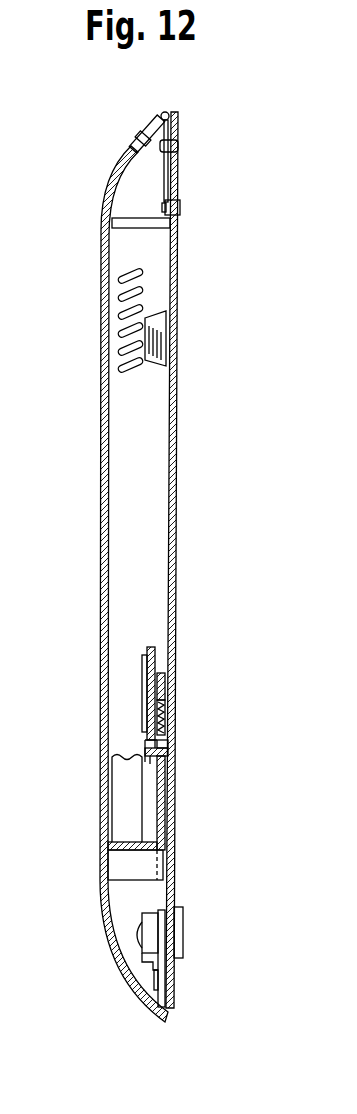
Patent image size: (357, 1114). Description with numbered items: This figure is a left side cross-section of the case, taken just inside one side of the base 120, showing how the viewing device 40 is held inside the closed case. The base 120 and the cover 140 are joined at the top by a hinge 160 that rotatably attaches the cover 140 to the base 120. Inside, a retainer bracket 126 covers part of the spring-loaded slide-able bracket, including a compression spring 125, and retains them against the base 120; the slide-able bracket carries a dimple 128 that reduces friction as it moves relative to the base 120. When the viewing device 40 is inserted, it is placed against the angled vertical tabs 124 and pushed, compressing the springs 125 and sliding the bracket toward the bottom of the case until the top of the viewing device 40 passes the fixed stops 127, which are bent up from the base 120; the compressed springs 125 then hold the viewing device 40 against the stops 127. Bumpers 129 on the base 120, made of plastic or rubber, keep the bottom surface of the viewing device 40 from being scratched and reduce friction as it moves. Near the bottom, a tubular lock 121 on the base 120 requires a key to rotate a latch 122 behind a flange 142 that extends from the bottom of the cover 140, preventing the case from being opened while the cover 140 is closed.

The viewing device 40 is at (127, 810).
The base 120 is at (176, 893).
The tubular lock 121 is at (184, 935).
The latch 122 is at (152, 988).
The angled vertical tabs 124 is at (117, 870).
The compression springs 125 is at (164, 720).
The retainer bracket 126 is at (157, 662).
The fixed stops 127 is at (130, 217).
The dimple 128 is at (165, 858).
The bumpers 129 is at (153, 366).
The cover 140 is at (104, 915).
The flange 142 is at (174, 994).
The hinge 160 is at (165, 112).